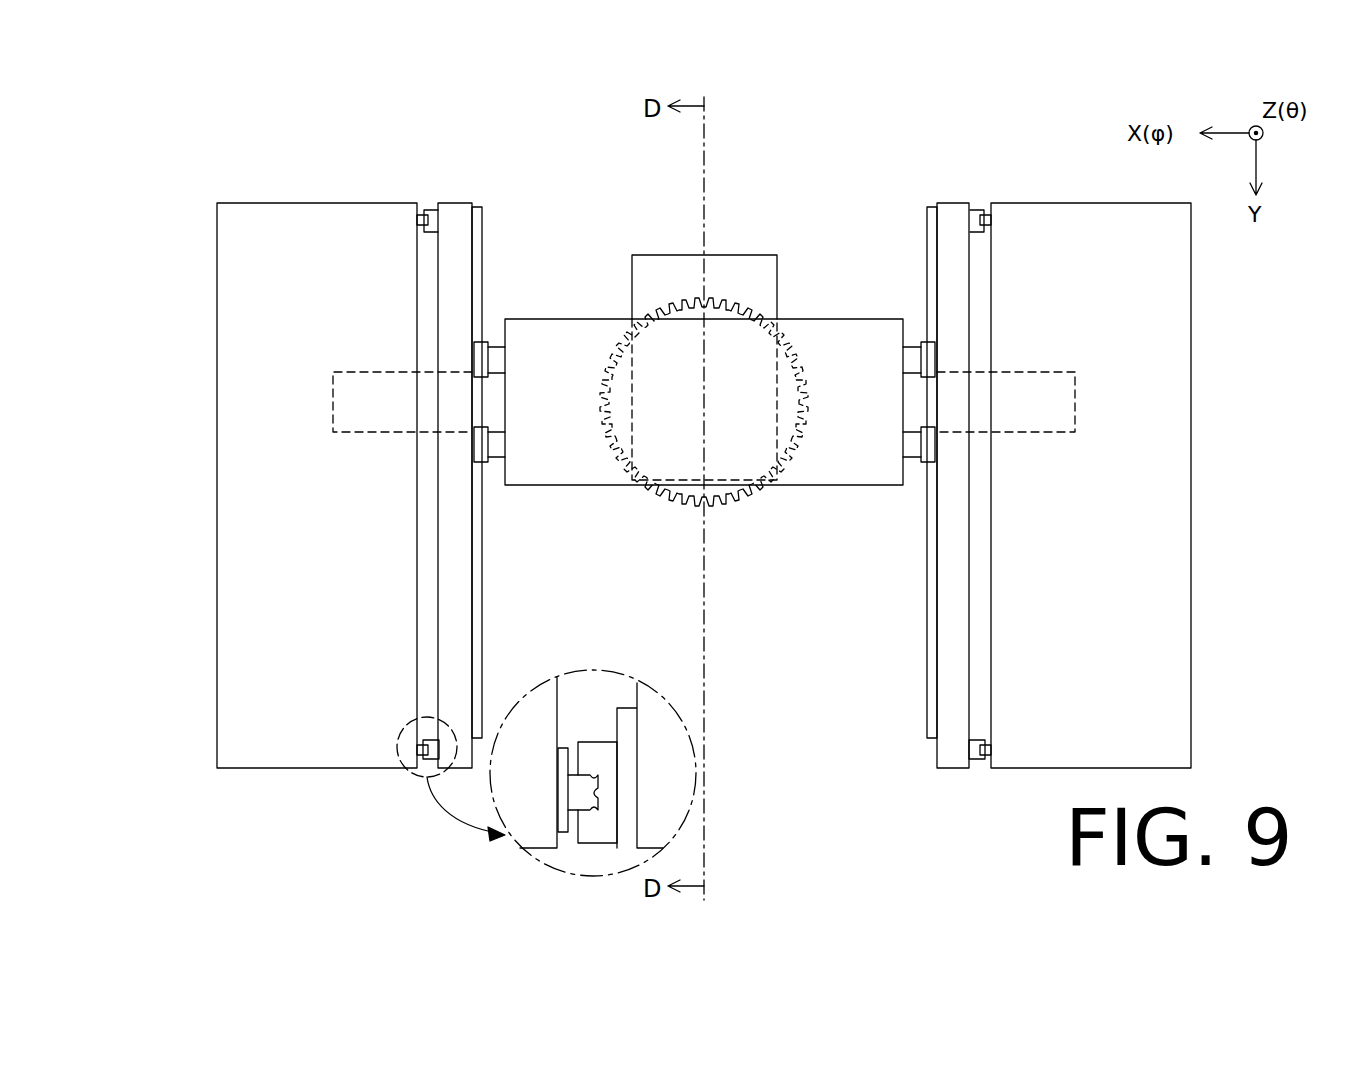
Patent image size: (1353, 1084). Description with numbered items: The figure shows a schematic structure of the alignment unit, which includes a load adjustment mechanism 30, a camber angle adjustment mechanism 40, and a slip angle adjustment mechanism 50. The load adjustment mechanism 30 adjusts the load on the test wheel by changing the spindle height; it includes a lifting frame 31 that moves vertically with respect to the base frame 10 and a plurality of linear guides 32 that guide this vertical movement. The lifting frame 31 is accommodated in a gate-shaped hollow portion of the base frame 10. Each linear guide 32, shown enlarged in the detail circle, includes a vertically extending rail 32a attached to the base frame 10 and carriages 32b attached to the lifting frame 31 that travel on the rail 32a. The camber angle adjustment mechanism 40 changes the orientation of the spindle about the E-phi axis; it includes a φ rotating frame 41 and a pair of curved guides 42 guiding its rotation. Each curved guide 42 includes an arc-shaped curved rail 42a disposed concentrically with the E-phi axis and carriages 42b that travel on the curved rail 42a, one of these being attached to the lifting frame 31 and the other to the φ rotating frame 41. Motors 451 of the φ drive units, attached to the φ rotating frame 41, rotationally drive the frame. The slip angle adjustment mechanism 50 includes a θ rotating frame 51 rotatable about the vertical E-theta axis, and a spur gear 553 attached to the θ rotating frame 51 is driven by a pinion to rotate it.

The base frame 10 is at (272, 203).
The lifting frame 31 is at (455, 203).
The linear guide 32 is at (637, 773).
The rail 32a is at (588, 793).
The carriage 32b is at (602, 825).
The load adjustment mechanism 30 is at (694, 509).
The camber angle adjustment mechanism 40 is at (577, 472).
The φ rotating frame 41 is at (808, 485).
The curved guide 42 is at (704, 472).
The curved rail 42a is at (477, 580).
The carriage 42b is at (483, 443).
The motor 451 is at (333, 400).
The slip angle adjustment mechanism 50 is at (751, 379).
The θ rotating frame 51 is at (735, 255).
The spur gear 553 is at (742, 310).